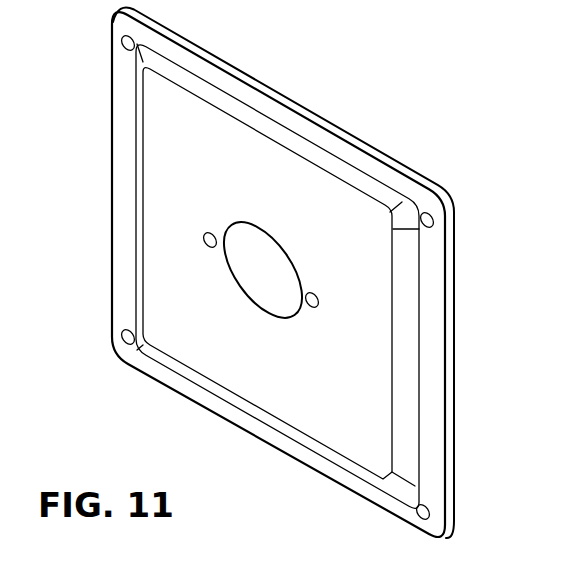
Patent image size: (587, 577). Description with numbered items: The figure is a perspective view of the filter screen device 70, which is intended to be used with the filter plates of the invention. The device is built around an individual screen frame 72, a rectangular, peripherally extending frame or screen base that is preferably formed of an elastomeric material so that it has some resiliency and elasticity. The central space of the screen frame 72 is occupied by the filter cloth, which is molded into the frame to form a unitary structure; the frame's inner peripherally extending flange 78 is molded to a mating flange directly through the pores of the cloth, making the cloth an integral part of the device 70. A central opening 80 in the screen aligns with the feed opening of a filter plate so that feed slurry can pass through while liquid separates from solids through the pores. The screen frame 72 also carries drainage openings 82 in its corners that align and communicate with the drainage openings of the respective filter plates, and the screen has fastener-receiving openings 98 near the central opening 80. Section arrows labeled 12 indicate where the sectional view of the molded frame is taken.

The filter screen device 70 is at (197, 424).
The screen frame 72 is at (457, 372).
The inner peripherally extending flange 78 is at (192, 83).
The central opening 80 is at (258, 265).
The drainage openings 82 is at (121, 41).
The fastener-receiving openings 98 is at (204, 236).
The section line for FIG. 12 is at (330, 49).